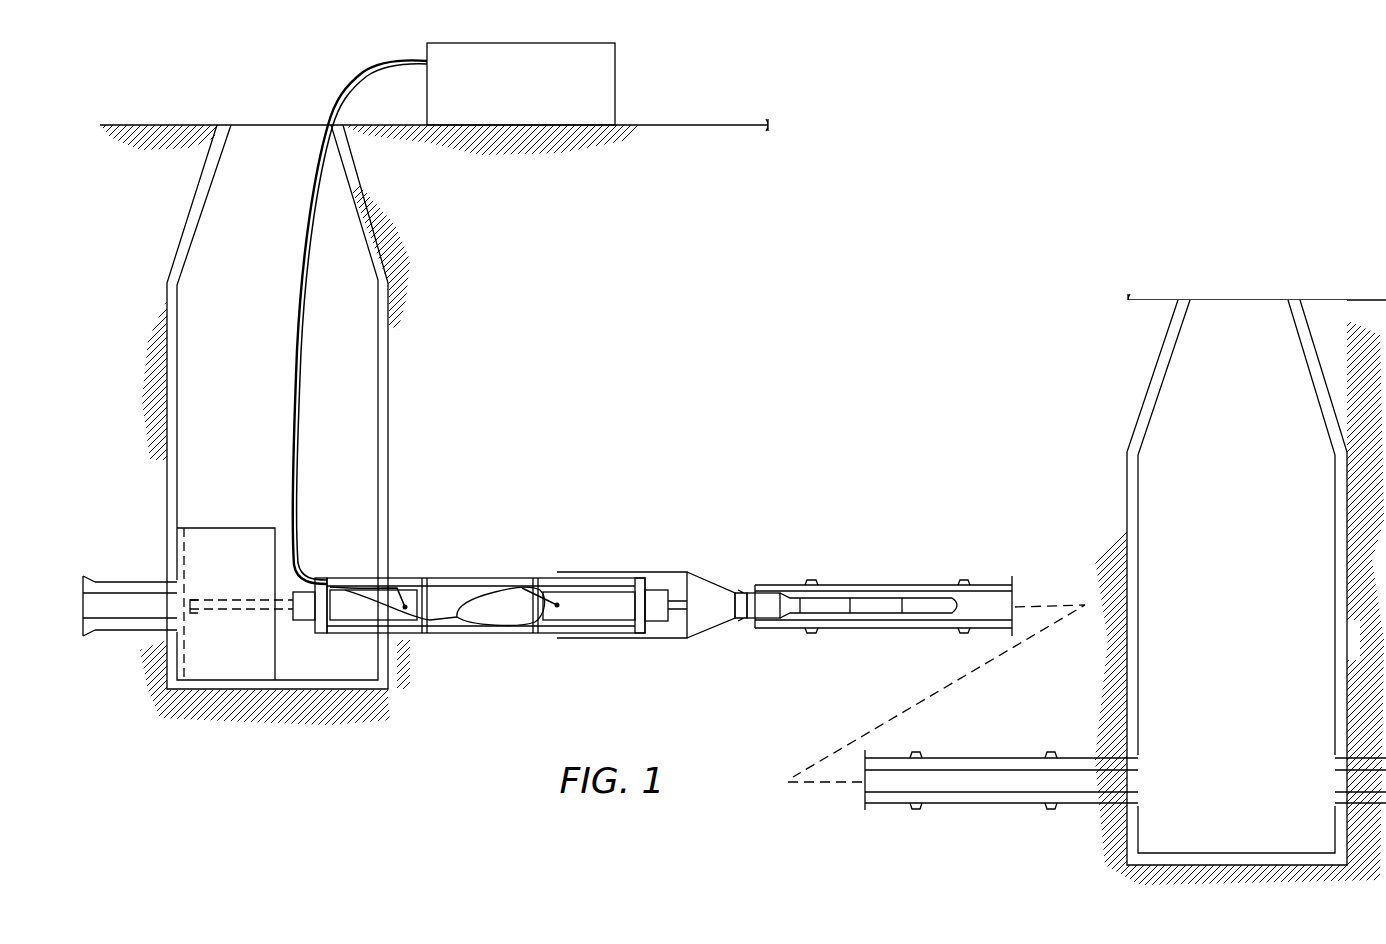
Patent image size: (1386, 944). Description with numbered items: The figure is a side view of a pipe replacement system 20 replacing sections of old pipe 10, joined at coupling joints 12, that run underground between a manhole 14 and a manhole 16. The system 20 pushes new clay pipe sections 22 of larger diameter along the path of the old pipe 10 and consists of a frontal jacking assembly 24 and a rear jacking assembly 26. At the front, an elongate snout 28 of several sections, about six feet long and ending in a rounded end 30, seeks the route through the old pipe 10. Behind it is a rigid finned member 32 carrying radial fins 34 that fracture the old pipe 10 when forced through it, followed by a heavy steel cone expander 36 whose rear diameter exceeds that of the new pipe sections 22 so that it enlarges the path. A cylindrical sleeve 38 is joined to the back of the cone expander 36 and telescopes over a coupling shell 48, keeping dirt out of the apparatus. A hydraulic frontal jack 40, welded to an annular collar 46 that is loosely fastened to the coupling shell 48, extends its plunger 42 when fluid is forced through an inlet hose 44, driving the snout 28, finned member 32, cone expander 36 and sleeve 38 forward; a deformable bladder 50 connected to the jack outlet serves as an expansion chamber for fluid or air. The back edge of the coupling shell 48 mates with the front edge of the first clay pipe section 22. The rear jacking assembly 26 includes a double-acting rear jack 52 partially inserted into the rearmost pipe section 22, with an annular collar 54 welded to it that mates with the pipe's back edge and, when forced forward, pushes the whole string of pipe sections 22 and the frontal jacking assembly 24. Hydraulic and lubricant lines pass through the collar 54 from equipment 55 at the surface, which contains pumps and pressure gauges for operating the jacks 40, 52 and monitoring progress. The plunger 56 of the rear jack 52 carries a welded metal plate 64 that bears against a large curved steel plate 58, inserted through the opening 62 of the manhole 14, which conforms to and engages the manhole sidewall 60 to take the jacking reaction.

The old pipe 10 is at (888, 805).
The coupling joints 12 is at (918, 808).
The manhole 14 is at (207, 205).
The manhole 16 is at (1140, 490).
The pipe replacement system 20 is at (669, 545).
The new pipe sections 22 is at (415, 578).
The frontal jacking assembly 24 is at (784, 571).
The rear jacking assembly 26 is at (507, 573).
The snout 28 is at (878, 602).
The rounded end 30 is at (975, 588).
The finned member 32 is at (765, 596).
The fins 34 is at (738, 620).
The cone expander 36 is at (708, 592).
The cylindrical sleeve 38 is at (620, 572).
The frontal jack 40 is at (600, 613).
The plunger 42 is at (678, 622).
The inlet hose 44 is at (535, 626).
The annular collar 46 is at (640, 634).
The coupling shell 48 is at (543, 578).
The deformable bladder 50 is at (467, 619).
The rear jack 52 is at (305, 620).
The annular collar 54 is at (322, 578).
The equipment 55 is at (615, 85).
The plunger 56 is at (283, 597).
The steel plate 58 is at (225, 528).
The sidewall 60 is at (178, 452).
The opening 62 is at (238, 118).
The metal plate 64 is at (192, 590).